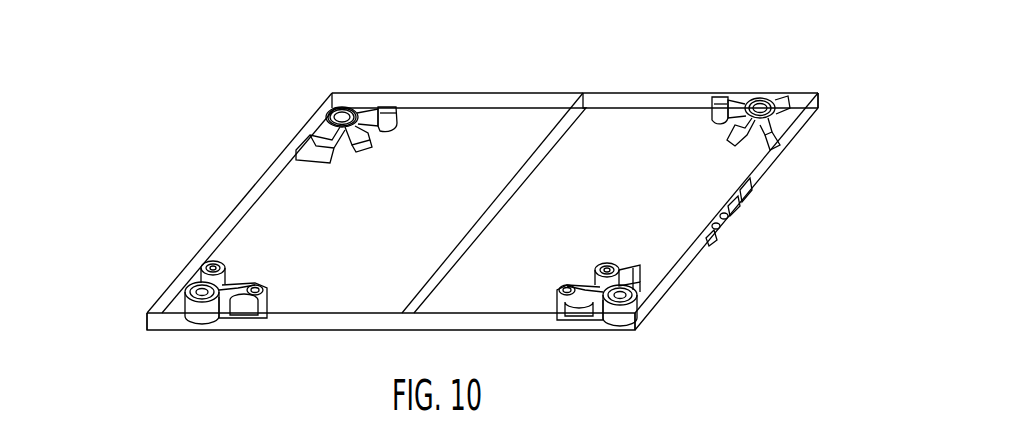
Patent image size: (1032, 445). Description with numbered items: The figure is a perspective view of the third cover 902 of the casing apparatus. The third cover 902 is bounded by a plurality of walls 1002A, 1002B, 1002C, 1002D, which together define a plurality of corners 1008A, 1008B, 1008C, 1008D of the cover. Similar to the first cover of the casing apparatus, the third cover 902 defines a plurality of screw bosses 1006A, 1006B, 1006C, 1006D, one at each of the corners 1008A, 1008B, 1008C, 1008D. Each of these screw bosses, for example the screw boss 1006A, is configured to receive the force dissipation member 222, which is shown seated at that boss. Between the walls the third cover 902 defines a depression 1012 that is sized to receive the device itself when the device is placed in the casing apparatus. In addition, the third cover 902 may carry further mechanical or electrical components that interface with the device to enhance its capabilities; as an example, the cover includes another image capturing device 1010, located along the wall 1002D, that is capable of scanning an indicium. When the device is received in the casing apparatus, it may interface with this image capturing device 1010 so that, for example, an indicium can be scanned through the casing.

The third cover 902 is at (214, 110).
The wall 1002A is at (256, 183).
The wall 1002B is at (448, 93).
The wall 1002C is at (362, 331).
The wall 1002D is at (760, 177).
The depression 1012 is at (521, 124).
The image capturing device 1010 is at (731, 212).
The screw boss 1006A is at (343, 110).
The screw boss 1006B is at (768, 101).
The screw boss 1006C is at (207, 281).
The screw boss 1006D is at (632, 290).
The force dissipation member 222 is at (353, 112).
The corner 1008A is at (332, 93).
The corner 1008B is at (818, 93).
The corner 1008C is at (147, 313).
The corner 1008D is at (637, 331).